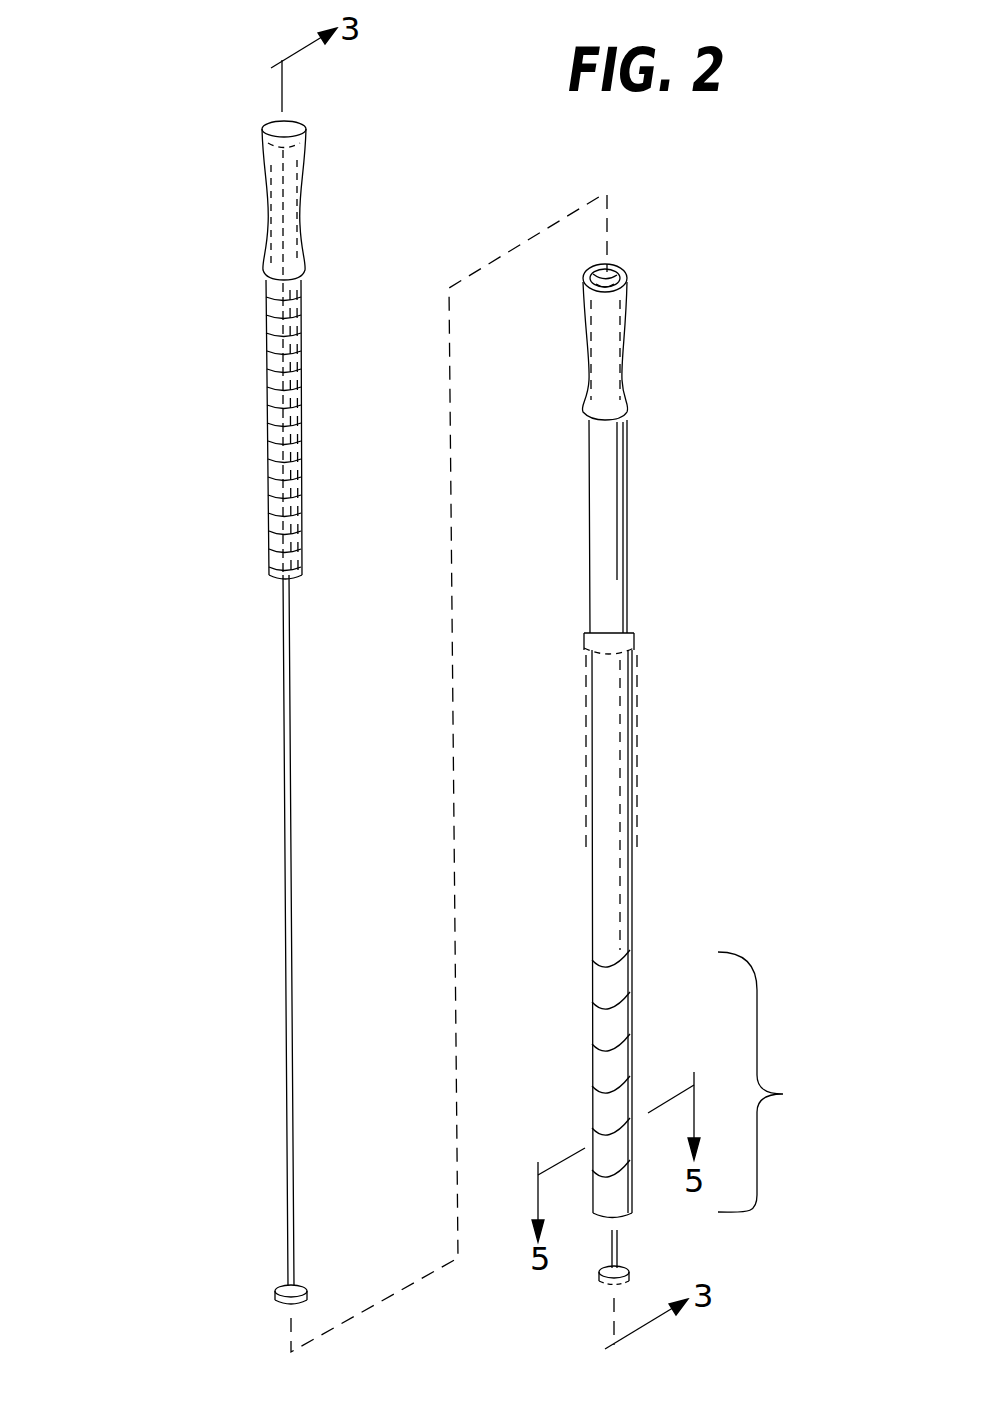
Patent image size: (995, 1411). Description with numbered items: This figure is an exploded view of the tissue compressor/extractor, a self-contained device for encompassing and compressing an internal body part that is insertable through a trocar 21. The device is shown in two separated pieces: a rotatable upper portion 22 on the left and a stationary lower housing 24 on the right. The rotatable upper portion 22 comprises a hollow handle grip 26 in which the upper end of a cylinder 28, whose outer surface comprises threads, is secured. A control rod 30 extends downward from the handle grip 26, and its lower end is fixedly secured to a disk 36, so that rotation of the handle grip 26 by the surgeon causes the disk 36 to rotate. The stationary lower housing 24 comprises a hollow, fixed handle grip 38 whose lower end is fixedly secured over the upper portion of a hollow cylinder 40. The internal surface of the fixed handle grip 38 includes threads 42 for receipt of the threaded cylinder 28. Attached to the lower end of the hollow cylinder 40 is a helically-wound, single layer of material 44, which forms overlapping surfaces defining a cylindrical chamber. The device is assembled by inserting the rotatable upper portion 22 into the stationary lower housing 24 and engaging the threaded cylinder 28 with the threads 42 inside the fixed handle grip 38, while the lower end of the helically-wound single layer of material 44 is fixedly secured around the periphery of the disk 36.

The trocar 21 is at (635, 725).
The rotatable upper portion 22 is at (205, 342).
The stationary lower housing 24 is at (668, 508).
The handle grip 26 is at (304, 181).
The cylinder 28 is at (297, 325).
The control rod 30 is at (289, 707).
The disk 36 is at (307, 1287).
The fixed handle grip 38 is at (628, 327).
The hollow cylinder 40 is at (618, 434).
The threads 42 is at (618, 269).
The helically-wound single layer of material 44 is at (778, 1082).